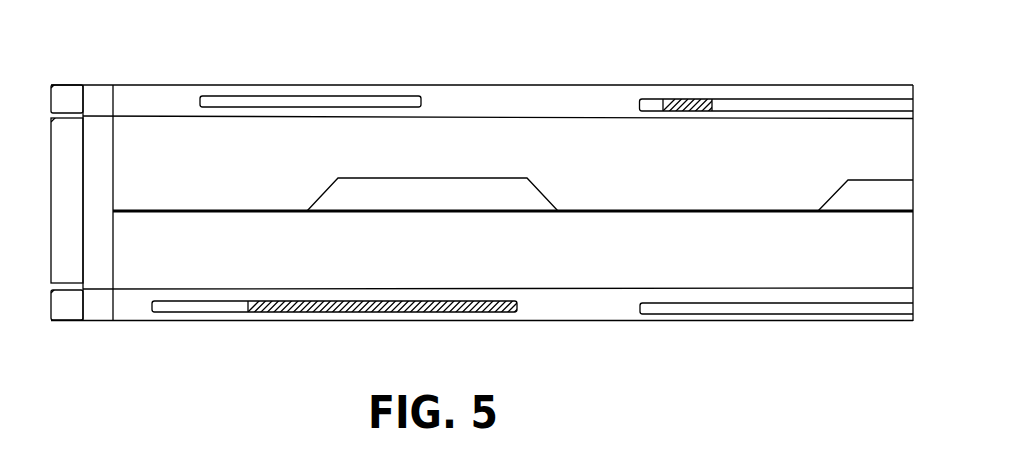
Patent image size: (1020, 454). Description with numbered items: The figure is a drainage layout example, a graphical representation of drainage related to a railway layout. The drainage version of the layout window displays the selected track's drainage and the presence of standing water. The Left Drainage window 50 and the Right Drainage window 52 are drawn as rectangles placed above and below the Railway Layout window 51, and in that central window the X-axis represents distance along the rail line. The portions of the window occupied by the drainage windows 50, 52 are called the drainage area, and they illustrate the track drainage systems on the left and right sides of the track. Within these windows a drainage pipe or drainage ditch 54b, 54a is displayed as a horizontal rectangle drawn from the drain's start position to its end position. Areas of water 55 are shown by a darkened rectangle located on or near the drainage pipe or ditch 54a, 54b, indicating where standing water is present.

The Left Drainage window 50 is at (143, 85).
The Railway Layout window 51 is at (720, 181).
The Right Drainage window 52 is at (133, 303).
The drainage pipe or drainage ditch 54a is at (682, 314).
The drainage pipe or drainage ditch 54b is at (363, 100).
The areas of water 55 is at (505, 312).